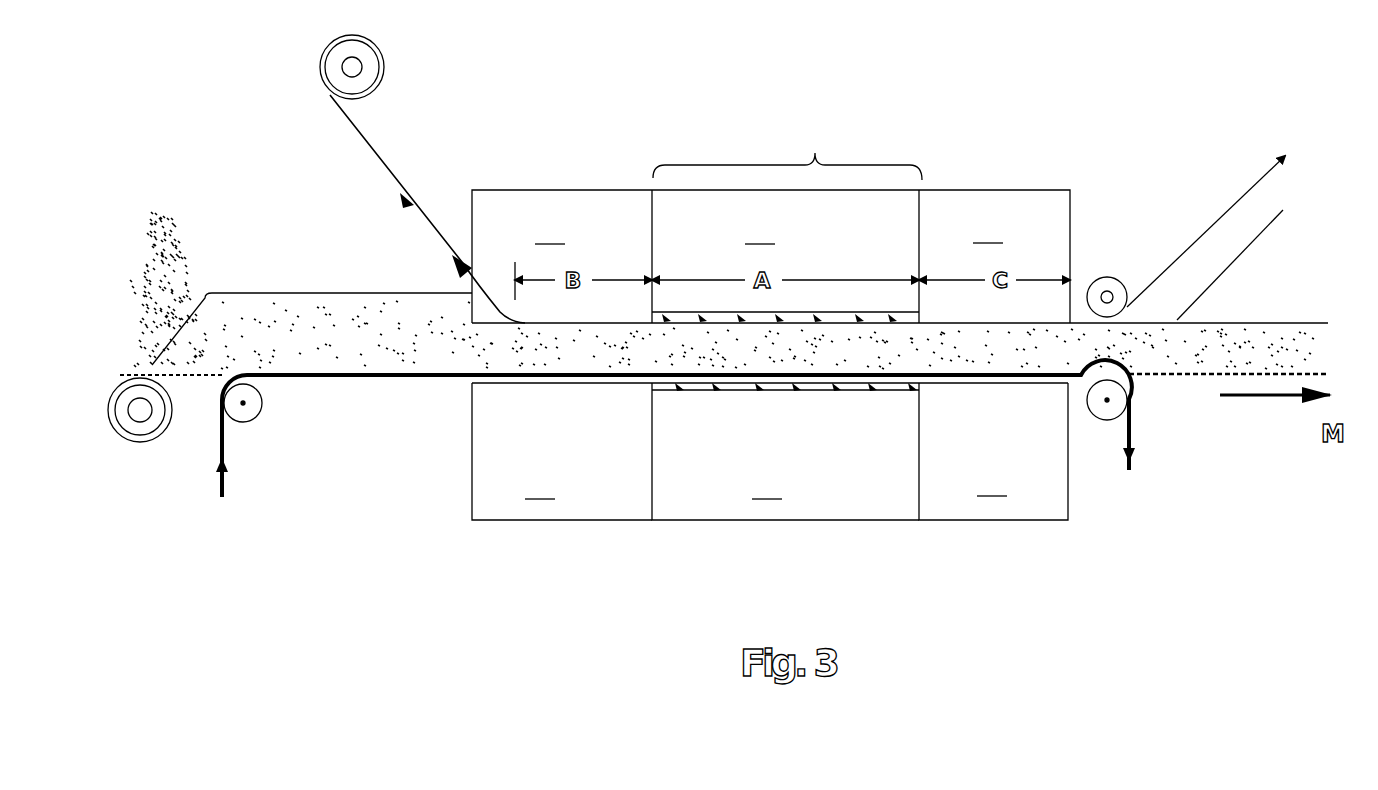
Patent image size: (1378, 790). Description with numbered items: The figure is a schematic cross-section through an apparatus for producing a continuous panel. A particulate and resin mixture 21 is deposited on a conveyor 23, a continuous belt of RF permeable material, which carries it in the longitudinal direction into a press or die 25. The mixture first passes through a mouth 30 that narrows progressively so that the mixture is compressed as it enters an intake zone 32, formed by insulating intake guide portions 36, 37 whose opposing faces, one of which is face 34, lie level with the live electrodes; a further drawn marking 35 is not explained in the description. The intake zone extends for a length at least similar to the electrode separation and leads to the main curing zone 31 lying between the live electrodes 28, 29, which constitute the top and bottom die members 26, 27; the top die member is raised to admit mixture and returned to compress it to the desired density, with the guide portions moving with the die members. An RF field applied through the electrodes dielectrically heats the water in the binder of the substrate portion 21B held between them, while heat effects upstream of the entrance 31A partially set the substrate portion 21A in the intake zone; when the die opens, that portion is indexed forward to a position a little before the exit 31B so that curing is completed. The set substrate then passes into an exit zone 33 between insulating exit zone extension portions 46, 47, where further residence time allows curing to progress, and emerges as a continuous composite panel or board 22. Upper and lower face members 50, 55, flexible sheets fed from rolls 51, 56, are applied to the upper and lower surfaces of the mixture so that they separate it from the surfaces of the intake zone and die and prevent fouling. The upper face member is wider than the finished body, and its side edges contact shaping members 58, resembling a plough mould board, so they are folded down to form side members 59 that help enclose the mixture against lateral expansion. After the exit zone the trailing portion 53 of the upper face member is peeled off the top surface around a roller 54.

The particulate and resin mixture 21 is at (353, 320).
The substrate portion upstream of the main curing zone 21A is at (565, 374).
The substrate portion between the live electrodes 21B is at (840, 385).
The continuous composite panel or board 22 is at (1250, 345).
The conveyor 23 is at (340, 383).
The press or die 25 is at (787, 144).
The top die member 26 is at (771, 256).
The bottom die member 27 is at (785, 451).
The upper live electrode 28 is at (836, 312).
The lower live electrode 29 is at (897, 390).
The mouth 30 is at (465, 262).
The main curing zone 31 is at (727, 362).
The entrance of the main curing zone 31A is at (644, 345).
The exit of the main curing zone 31B is at (937, 385).
The intake zone 32 is at (543, 360).
The exit zone 33 is at (1082, 270).
The opposing face of the intake zone 34 is at (628, 340).
The entry position 35 is at (652, 350).
The upper intake guide portion 36 is at (562, 256).
The lower intake guide portion 37 is at (770, 451).
The upper exit zone extension portion 46 is at (994, 256).
The lower exit zone extension portion 47 is at (993, 451).
The upper face member 50 is at (353, 125).
The roll 51 is at (382, 60).
The trailing portion of the upper face member 53 is at (1205, 232).
The roller 54 is at (1125, 278).
The lower face member 55 is at (207, 380).
The roll 56 is at (162, 423).
The shaping member 58 is at (436, 292).
The side member 59 is at (443, 296).